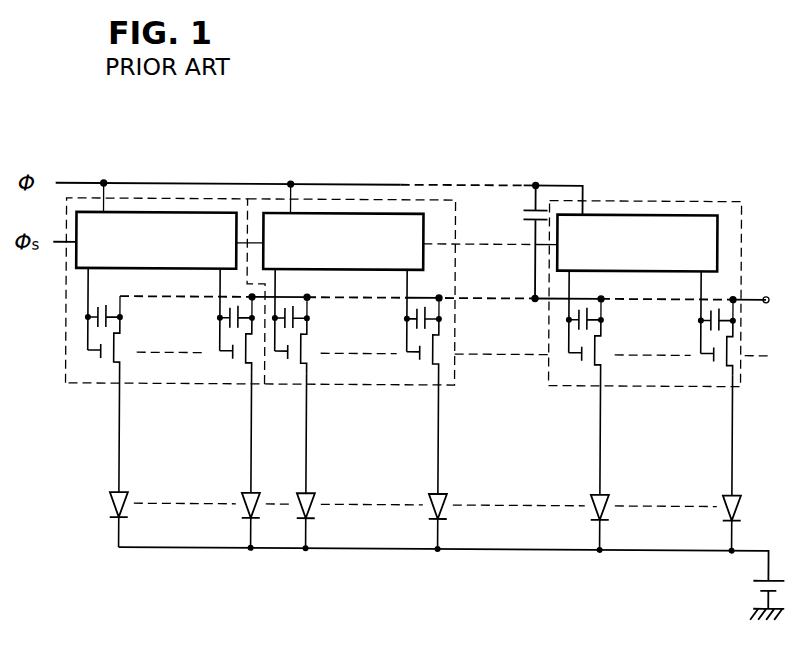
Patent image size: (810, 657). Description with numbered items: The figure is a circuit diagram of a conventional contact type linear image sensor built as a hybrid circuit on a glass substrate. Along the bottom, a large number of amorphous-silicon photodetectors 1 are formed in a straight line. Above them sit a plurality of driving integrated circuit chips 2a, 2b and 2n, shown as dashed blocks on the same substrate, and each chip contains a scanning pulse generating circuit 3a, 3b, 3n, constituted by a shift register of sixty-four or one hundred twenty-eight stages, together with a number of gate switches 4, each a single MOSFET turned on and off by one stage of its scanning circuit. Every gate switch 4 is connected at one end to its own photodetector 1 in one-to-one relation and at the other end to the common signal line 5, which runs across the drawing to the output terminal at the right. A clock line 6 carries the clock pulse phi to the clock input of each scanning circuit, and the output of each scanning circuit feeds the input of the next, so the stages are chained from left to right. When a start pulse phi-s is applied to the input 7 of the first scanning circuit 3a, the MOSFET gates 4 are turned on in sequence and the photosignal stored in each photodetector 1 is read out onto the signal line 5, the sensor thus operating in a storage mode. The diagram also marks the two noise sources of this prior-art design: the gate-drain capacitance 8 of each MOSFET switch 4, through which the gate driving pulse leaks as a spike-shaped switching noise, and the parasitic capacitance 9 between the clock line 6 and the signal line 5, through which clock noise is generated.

The photodetector 1 is at (112, 507).
The driving integrated circuit chip 2a is at (140, 197).
The driving integrated circuit chip 2b is at (345, 197).
The driving integrated circuit chip 2n is at (617, 198).
The scanning pulse generating circuit 3a is at (187, 212).
The scanning pulse generating circuit 3b is at (385, 212).
The scanning pulse generating circuit 3n is at (665, 212).
The gate switch 4 is at (109, 368).
The common signal line 5 is at (752, 296).
The clock line 6 is at (78, 183).
The input of the first scanning circuit 7 is at (55, 243).
The gate-drain capacitance 8 is at (102, 330).
The parasitic capacitance 9 is at (547, 212).